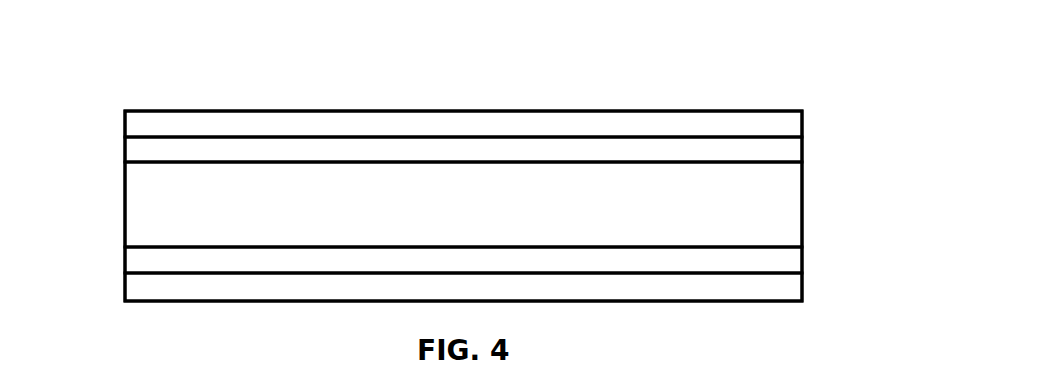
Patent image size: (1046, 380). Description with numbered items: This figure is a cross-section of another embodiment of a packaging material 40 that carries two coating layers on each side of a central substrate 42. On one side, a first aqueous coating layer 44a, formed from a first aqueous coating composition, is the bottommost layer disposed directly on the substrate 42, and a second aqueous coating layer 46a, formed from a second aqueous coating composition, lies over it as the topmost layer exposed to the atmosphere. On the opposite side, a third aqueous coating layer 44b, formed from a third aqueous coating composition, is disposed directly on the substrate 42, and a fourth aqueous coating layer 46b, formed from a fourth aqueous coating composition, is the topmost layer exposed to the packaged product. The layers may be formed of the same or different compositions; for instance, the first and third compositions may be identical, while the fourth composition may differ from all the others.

The packaging material 40 is at (818, 205).
The substrate 42 is at (115, 210).
The first aqueous coating layer 44a is at (115, 147).
The third aqueous coating layer 44b is at (118, 262).
The second aqueous coating layer 46a is at (135, 100).
The fourth aqueous coating layer 46b is at (118, 283).